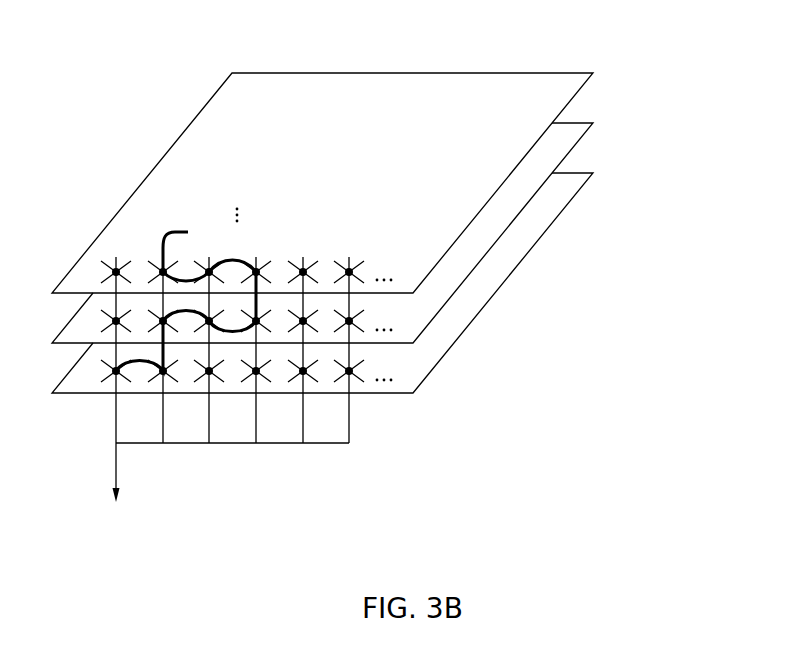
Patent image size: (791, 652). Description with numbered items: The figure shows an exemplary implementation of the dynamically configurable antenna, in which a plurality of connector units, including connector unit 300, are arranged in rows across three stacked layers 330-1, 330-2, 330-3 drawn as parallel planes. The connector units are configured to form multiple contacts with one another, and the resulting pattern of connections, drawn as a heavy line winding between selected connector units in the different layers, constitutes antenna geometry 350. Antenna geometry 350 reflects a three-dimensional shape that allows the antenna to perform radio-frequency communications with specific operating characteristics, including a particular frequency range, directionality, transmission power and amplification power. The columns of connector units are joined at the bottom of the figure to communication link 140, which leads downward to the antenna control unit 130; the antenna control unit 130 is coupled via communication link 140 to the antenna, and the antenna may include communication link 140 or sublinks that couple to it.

The first antenna element layer 330-1 is at (543, 136).
The second antenna element layer 330-2 is at (508, 230).
The third antenna element layer 330-3 is at (477, 317).
The connector unit 300 is at (264, 250).
The antenna geometry 350 is at (160, 242).
The communication link 140 is at (116, 463).
The antenna control unit 130 is at (134, 607).